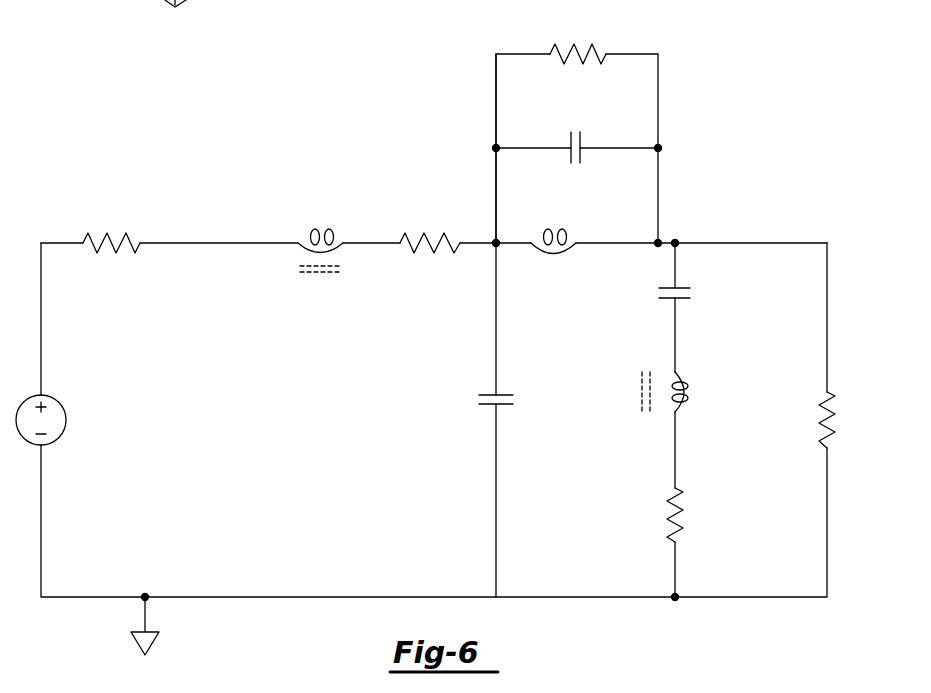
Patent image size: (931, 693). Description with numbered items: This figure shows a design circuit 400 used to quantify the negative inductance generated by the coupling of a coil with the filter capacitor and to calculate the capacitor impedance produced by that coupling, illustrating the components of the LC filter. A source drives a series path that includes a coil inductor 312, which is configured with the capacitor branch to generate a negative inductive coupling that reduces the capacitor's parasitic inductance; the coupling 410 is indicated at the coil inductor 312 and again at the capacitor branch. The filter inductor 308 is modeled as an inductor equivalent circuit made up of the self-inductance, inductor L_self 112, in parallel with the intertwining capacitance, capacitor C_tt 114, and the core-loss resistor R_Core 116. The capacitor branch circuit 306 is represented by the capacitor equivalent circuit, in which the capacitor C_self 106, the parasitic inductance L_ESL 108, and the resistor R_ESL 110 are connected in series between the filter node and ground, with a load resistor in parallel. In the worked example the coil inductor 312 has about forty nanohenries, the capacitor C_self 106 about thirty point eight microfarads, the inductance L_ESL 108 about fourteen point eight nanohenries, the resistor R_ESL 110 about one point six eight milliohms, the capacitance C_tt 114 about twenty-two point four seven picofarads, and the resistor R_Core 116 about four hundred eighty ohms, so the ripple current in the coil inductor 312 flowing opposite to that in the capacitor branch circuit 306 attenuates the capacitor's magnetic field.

The circuit 400 is at (748, 38).
The resistor R_Core 116 is at (552, 52).
The capacitor C_tt 114 is at (582, 157).
The inductor 308 is at (613, 129).
The inductor L_self 112 is at (555, 255).
The capacitor C_self 106 is at (661, 300).
The inductor L_ESL 108 is at (670, 415).
The resistor R_ESL 110 is at (638, 532).
The capacitor branch circuit 306 is at (688, 420).
The coil inductor 312 is at (302, 251).
The magnetic coupling indication 410 is at (320, 277).